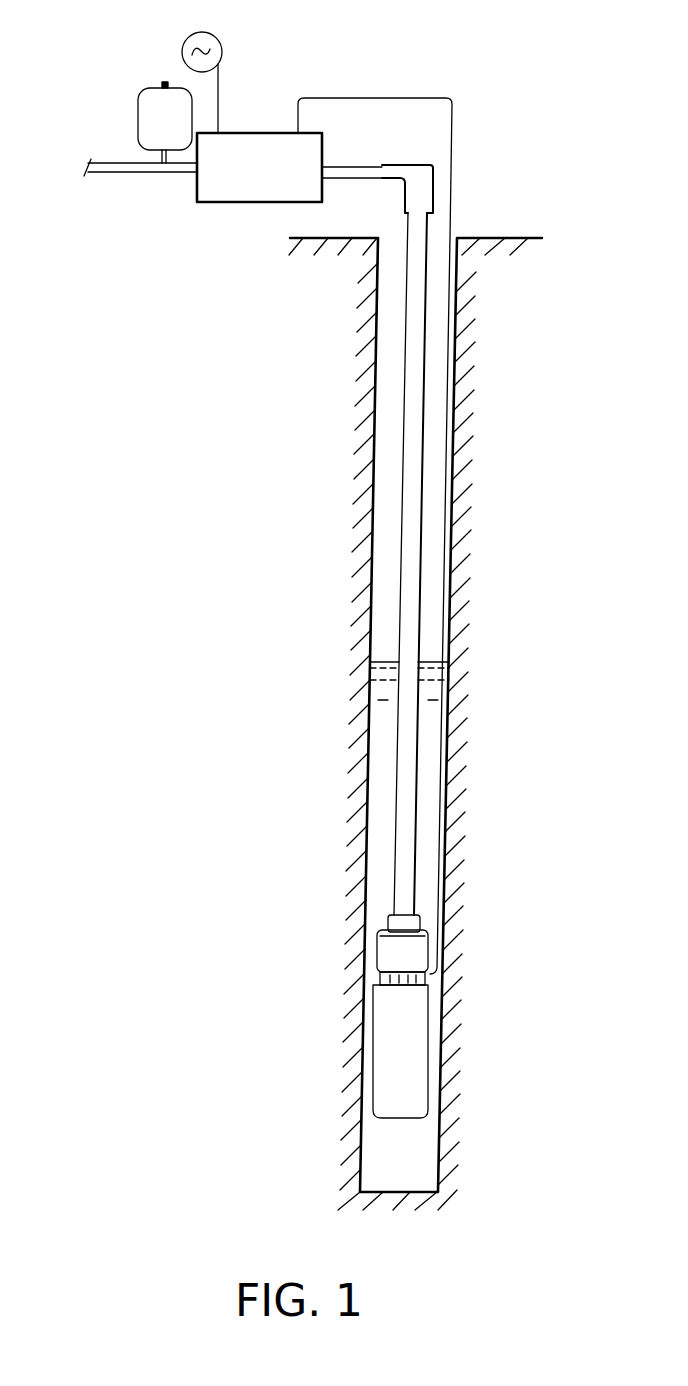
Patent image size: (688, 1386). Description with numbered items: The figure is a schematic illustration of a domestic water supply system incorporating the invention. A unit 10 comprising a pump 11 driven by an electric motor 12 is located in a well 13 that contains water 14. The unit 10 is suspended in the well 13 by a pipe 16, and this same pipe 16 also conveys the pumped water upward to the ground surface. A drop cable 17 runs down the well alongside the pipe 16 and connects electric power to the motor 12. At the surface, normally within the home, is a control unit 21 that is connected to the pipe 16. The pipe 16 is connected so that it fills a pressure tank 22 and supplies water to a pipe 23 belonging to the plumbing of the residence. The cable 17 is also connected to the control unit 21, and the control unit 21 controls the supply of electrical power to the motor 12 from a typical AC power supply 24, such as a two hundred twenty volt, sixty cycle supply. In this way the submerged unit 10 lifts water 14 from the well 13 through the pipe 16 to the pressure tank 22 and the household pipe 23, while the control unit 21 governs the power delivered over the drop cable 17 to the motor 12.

The unit 10 is at (458, 1016).
The pump 11 is at (413, 947).
The electric motor 12 is at (412, 1055).
The well 13 is at (372, 486).
The water 14 is at (380, 692).
The pipe 16 is at (413, 383).
The drop cable 17 is at (453, 170).
The control unit 21 is at (232, 205).
The pressure tank 22 is at (138, 113).
The pipe 23 is at (100, 175).
The AC power supply 24 is at (222, 40).